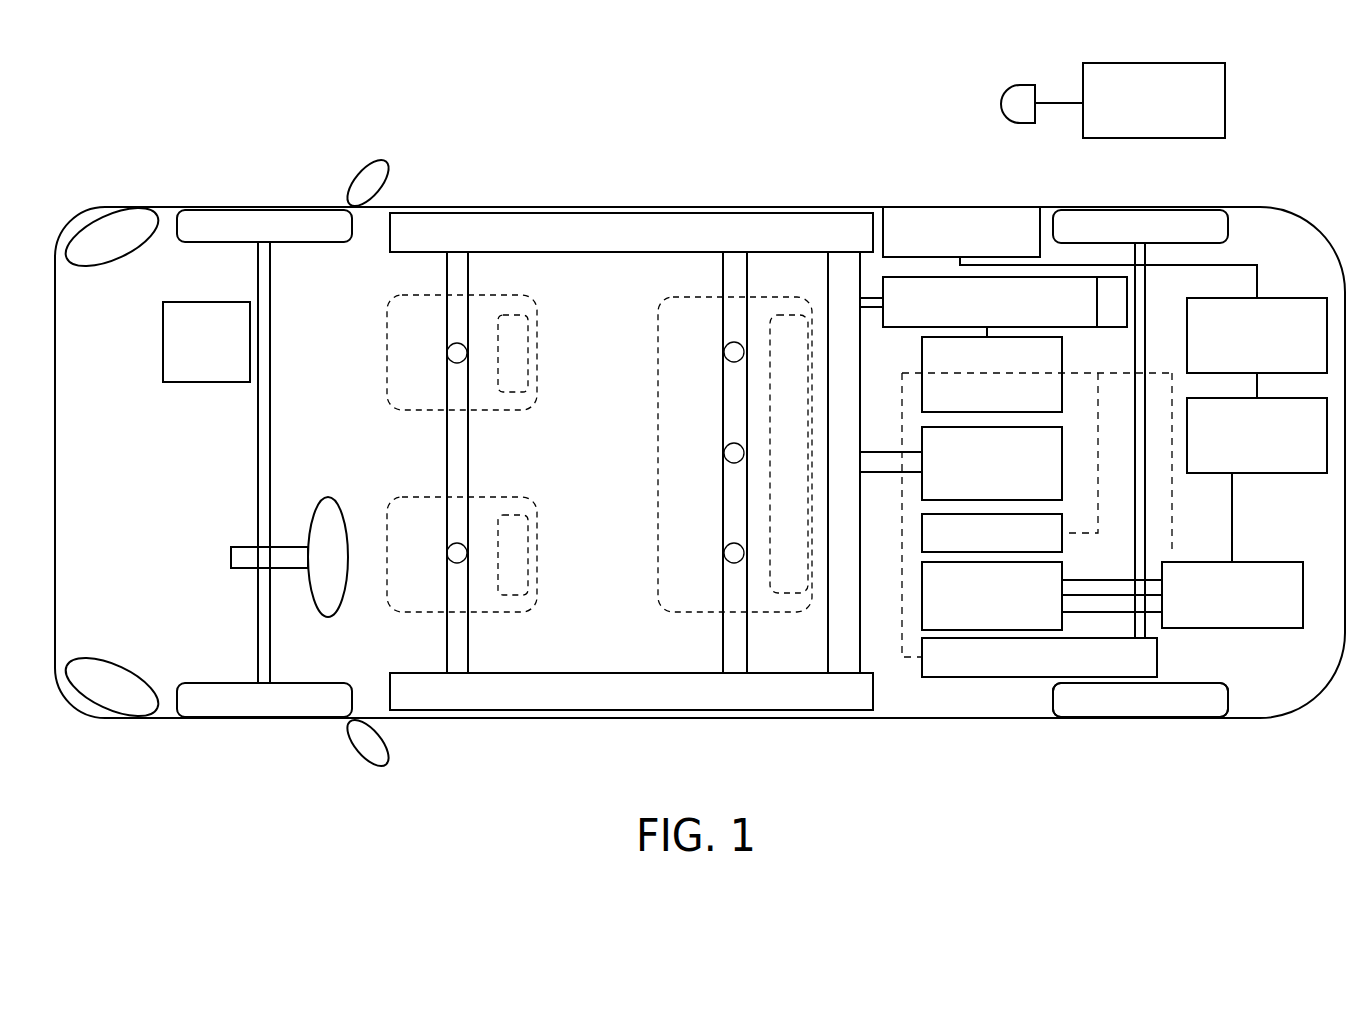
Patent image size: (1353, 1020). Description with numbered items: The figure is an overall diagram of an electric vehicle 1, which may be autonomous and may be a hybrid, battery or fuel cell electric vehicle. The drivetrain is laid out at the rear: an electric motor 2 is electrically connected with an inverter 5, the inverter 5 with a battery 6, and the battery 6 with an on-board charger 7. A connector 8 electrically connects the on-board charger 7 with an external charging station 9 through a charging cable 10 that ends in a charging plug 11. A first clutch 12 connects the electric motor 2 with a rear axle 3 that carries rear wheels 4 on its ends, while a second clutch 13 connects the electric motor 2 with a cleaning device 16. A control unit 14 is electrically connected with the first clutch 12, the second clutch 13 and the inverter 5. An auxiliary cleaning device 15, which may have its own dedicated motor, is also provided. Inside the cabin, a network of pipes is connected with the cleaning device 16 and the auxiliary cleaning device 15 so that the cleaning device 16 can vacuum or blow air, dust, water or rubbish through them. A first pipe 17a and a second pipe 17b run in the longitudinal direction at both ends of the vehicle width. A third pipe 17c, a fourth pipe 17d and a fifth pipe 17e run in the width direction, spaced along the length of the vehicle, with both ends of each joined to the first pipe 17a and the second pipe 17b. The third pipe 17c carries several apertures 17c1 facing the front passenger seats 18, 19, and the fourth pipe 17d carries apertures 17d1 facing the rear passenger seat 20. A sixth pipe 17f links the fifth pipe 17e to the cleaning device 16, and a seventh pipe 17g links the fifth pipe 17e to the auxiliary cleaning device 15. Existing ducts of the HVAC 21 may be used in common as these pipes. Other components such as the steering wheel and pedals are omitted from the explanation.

The electric vehicle 1 is at (655, 112).
The electric motor 2 is at (918, 600).
The rear axle 3 is at (1148, 315).
The rear wheels 4 is at (1178, 718).
The inverter 5 is at (1265, 630).
The battery 6 is at (1300, 475).
The on-board charger 7 is at (1290, 297).
The connector 8 is at (940, 207).
The charging station 9 is at (1225, 118).
The charging cable 10 is at (1062, 105).
The charging plug 11 is at (1018, 83).
The first clutch 12 is at (980, 679).
The second clutch 13 is at (920, 540).
The control unit 14 is at (920, 365).
The auxiliary cleaning device 15 is at (1073, 329).
The cleaning device 16 is at (920, 440).
The first pipe 17a is at (637, 243).
The second pipe 17b is at (660, 710).
The third pipe 17c is at (450, 428).
The apertures 17c1 is at (449, 350).
The fourth pipe 17d is at (730, 622).
The apertures 17d1 is at (726, 350).
The fifth pipe 17e is at (838, 620).
The sixth pipe 17f is at (880, 474).
The seventh pipe 17g is at (868, 297).
The front passenger seat 18 is at (522, 406).
The front passenger seat 19 is at (505, 612).
The rear passenger seat 20 is at (656, 430).
The HVAC 21 is at (224, 382).